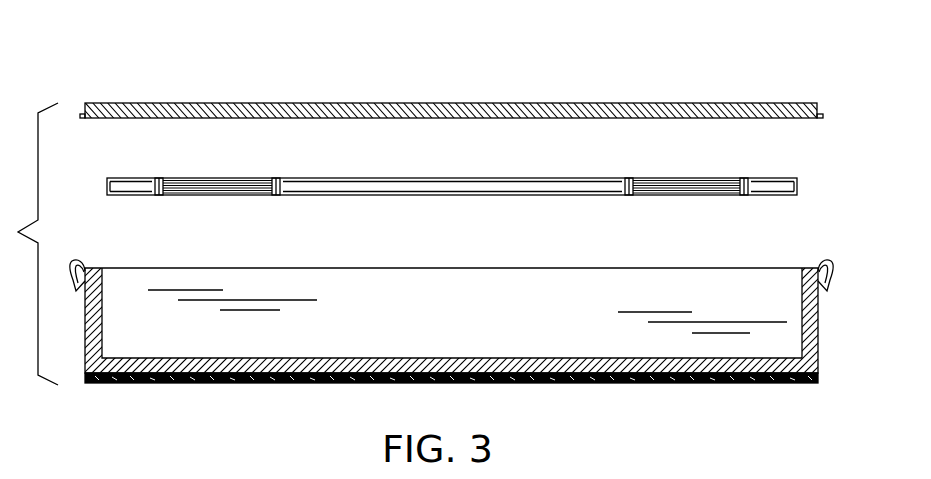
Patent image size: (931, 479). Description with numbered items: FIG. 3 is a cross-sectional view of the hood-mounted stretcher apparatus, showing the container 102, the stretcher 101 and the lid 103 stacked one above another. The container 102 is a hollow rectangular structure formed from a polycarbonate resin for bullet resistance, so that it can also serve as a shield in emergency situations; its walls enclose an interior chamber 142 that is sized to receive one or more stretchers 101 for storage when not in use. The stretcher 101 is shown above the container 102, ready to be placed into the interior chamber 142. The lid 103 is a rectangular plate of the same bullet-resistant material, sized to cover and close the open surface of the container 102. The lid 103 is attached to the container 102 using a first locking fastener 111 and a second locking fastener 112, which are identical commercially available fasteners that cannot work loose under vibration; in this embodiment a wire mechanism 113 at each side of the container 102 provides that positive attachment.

The stretcher 101 is at (452, 178).
The container 102 is at (283, 268).
The lid 103 is at (573, 103).
The first locking fastener 111 is at (823, 114).
The second locking fastener 112 is at (83, 114).
The wire mechanism 113 is at (81, 266).
The interior chamber 142 is at (467, 300).